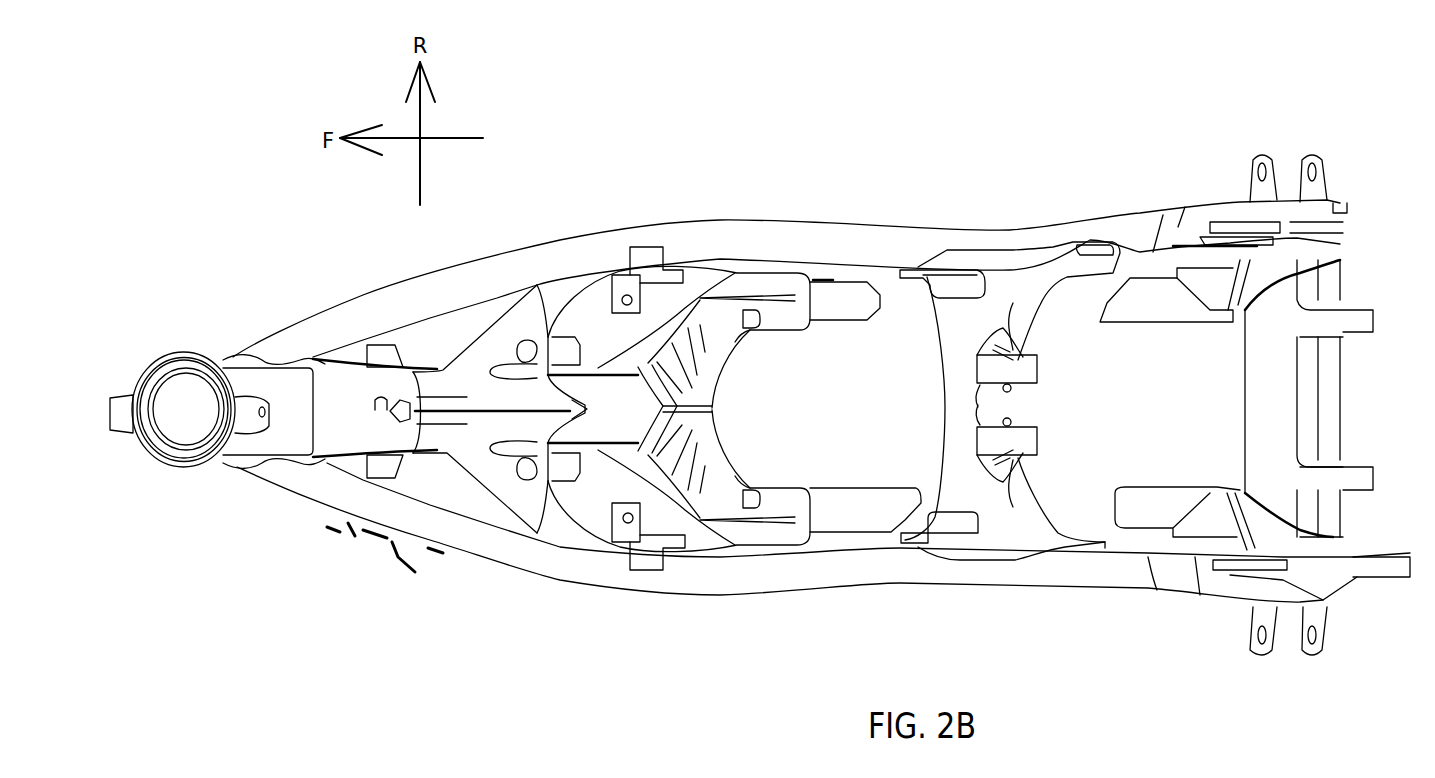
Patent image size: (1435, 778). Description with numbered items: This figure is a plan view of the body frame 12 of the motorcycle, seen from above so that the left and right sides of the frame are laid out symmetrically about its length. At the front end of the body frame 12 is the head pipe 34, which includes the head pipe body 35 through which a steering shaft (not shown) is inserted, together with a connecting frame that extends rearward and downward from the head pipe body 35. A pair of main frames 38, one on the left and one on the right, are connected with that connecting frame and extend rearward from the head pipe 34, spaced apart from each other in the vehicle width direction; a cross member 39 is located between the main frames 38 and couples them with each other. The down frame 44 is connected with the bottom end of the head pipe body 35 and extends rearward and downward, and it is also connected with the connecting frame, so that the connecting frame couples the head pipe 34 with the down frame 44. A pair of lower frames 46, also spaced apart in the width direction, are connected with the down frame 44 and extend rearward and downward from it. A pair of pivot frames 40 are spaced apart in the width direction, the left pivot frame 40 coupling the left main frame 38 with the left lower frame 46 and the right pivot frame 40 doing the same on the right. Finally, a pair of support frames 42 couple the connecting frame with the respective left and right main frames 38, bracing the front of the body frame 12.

The body frame 12 is at (400, 265).
The head pipe 34 is at (197, 348).
The head pipe body 35 is at (177, 457).
The main frames 38 is at (752, 240).
The cross member 39 is at (960, 403).
The pivot frames 40 is at (1180, 227).
The support frames 42 is at (478, 362).
The down frame 44 is at (710, 394).
The lower frames 46 is at (837, 312).